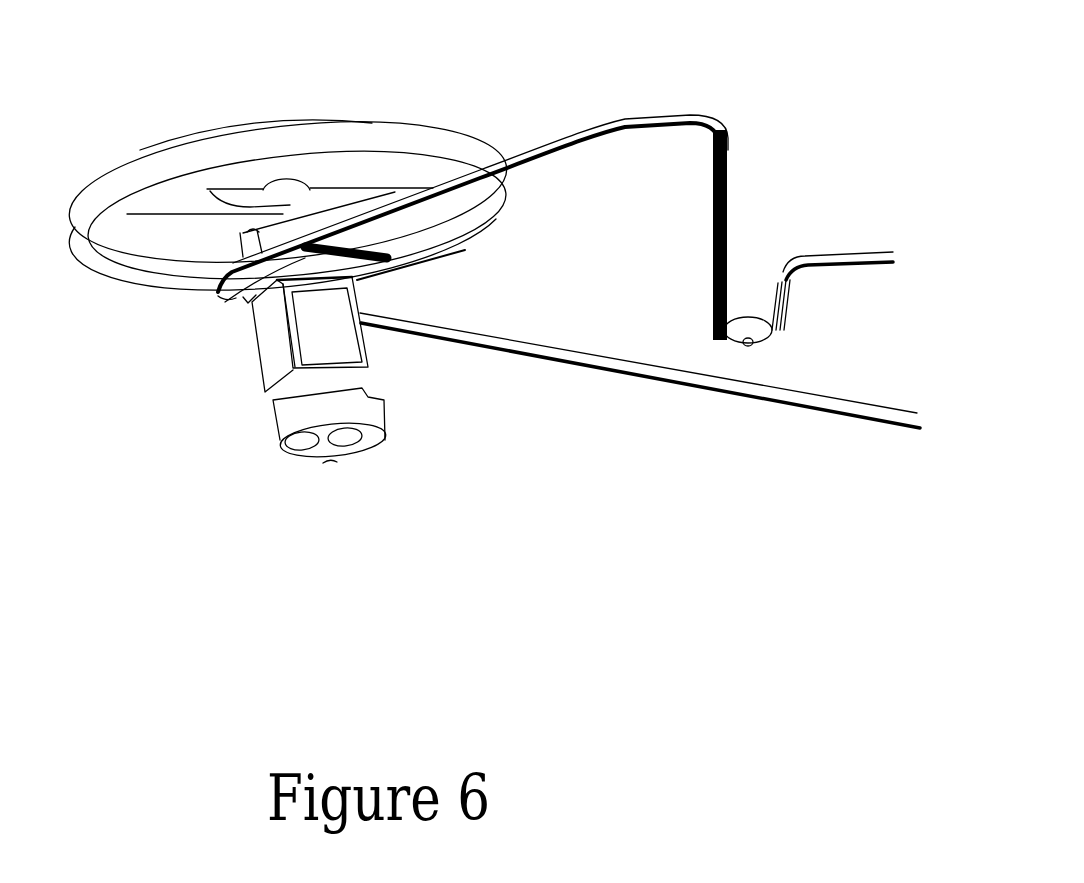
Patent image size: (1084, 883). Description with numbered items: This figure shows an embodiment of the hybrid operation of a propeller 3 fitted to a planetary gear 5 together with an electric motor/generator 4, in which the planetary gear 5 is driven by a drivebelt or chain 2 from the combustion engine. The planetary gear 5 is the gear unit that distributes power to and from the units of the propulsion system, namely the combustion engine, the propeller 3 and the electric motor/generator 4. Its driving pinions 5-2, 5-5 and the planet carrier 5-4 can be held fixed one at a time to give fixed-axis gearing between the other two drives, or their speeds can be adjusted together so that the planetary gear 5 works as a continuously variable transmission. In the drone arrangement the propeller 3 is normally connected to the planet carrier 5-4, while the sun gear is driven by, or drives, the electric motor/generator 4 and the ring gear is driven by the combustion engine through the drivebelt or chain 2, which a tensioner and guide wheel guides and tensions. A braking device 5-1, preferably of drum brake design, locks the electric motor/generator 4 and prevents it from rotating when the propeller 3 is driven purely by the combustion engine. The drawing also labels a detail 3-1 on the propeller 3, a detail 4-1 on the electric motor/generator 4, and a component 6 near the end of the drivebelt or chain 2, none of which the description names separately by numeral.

The drivebelt or chain 2 is at (627, 123).
The propeller 3 is at (183, 201).
The disc rim 3-1 is at (247, 147).
The electric motor/generator 4 is at (273, 363).
The bracket cylinder 4-1 is at (378, 420).
The planetary gear 5 is at (410, 265).
The braking device 5-1 is at (243, 233).
The driving pinion 5-2 is at (215, 283).
The planet carrier 5-4 is at (243, 297).
The driving pinion 5-5 is at (465, 250).
The connector strip 6 is at (743, 318).